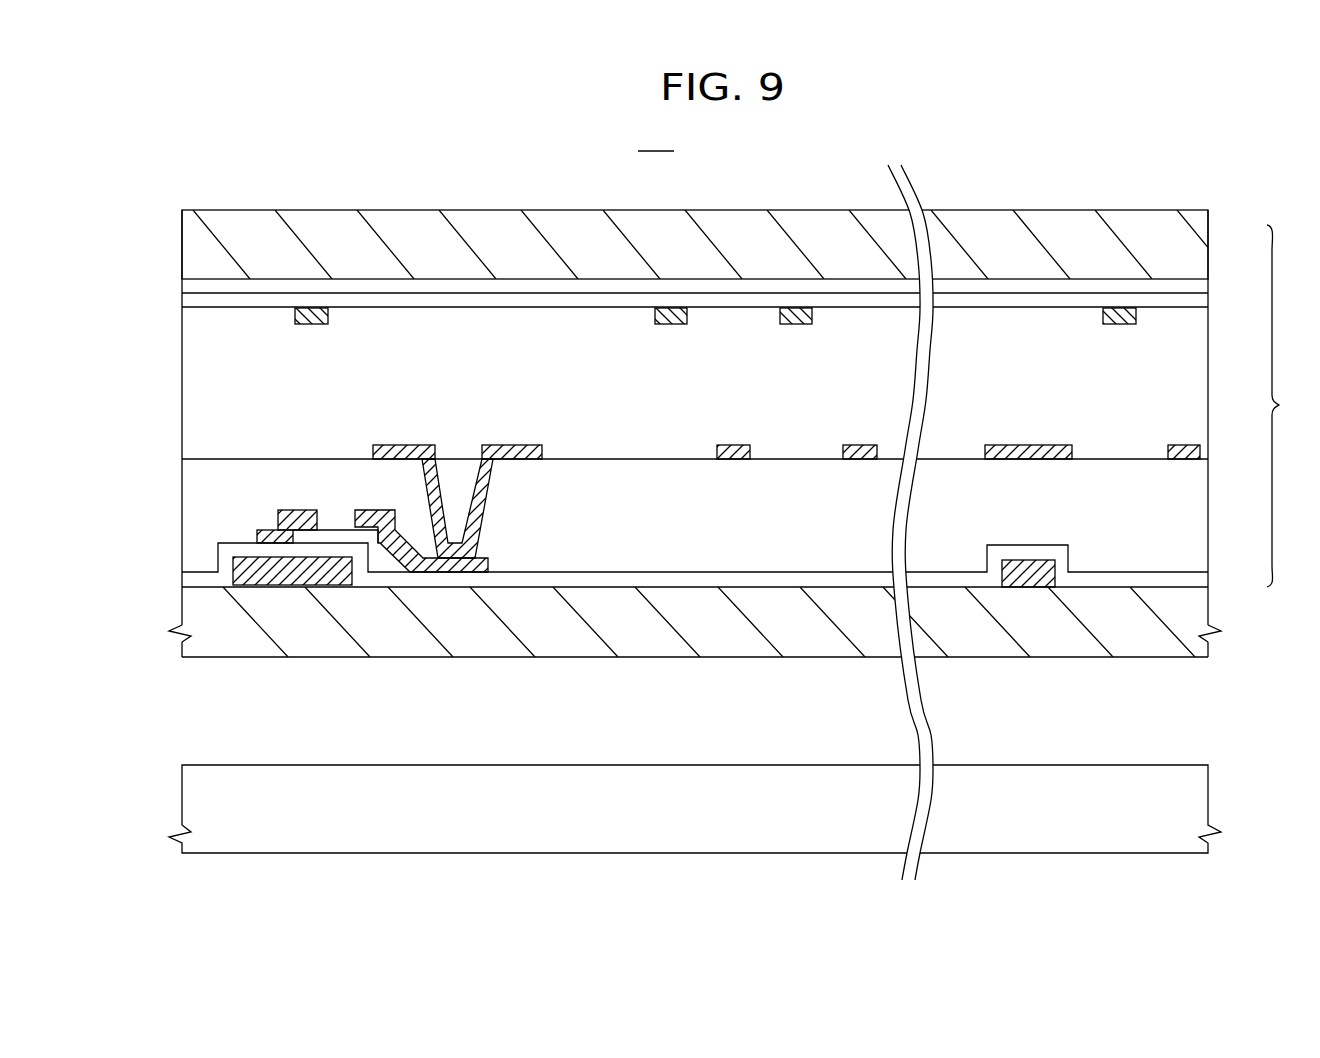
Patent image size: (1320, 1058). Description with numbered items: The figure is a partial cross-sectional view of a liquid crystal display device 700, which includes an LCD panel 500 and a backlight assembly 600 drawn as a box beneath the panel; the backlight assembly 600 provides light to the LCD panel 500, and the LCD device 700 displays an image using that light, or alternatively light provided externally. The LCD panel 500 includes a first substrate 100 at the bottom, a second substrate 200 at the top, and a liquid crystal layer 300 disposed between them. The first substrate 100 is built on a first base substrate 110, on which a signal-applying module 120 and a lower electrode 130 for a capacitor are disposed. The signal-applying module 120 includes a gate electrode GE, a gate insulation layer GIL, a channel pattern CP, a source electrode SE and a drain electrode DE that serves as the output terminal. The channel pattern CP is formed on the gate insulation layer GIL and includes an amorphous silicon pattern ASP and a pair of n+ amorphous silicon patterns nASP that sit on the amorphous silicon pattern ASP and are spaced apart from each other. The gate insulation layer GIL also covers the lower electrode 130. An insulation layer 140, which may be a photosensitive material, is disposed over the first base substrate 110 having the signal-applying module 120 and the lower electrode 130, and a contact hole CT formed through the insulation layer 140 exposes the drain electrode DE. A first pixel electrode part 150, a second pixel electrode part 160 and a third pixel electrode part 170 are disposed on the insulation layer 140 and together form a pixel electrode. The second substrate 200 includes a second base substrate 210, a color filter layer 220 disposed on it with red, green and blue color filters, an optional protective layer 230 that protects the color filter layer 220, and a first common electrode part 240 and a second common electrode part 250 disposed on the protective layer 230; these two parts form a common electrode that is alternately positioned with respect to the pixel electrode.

The LCD device 700 is at (656, 140).
The second substrate 200 is at (685, 298).
The second base substrate 210 is at (195, 233).
The color filter layer 220 is at (190, 283).
The protective layer 230 is at (190, 303).
The first common electrode part 240 is at (797, 324).
The second common electrode part 250 is at (1137, 313).
The liquid crystal layer 300 is at (190, 410).
The LCD panel 500 is at (1291, 406).
The first substrate 100 is at (689, 535).
The first base substrate 110 is at (190, 602).
The signal-applying module 120 is at (350, 636).
The lower electrode 130 is at (1027, 582).
The insulation layer 140 is at (190, 527).
The first pixel electrode part 150 is at (735, 452).
The second pixel electrode part 160 is at (1210, 457).
The third pixel electrode part 170 is at (1023, 447).
The backlight assembly 600 is at (205, 792).
The gate electrode GE is at (243, 587).
The gate insulation layer GIL is at (185, 578).
The amorphous silicon pattern ASP is at (375, 573).
The n+ amorphous silicon patterns nASP is at (300, 531).
The source electrode SE is at (262, 544).
The drain electrode DE is at (428, 573).
The channel pattern CP is at (382, 682).
The contact hole CT is at (464, 468).